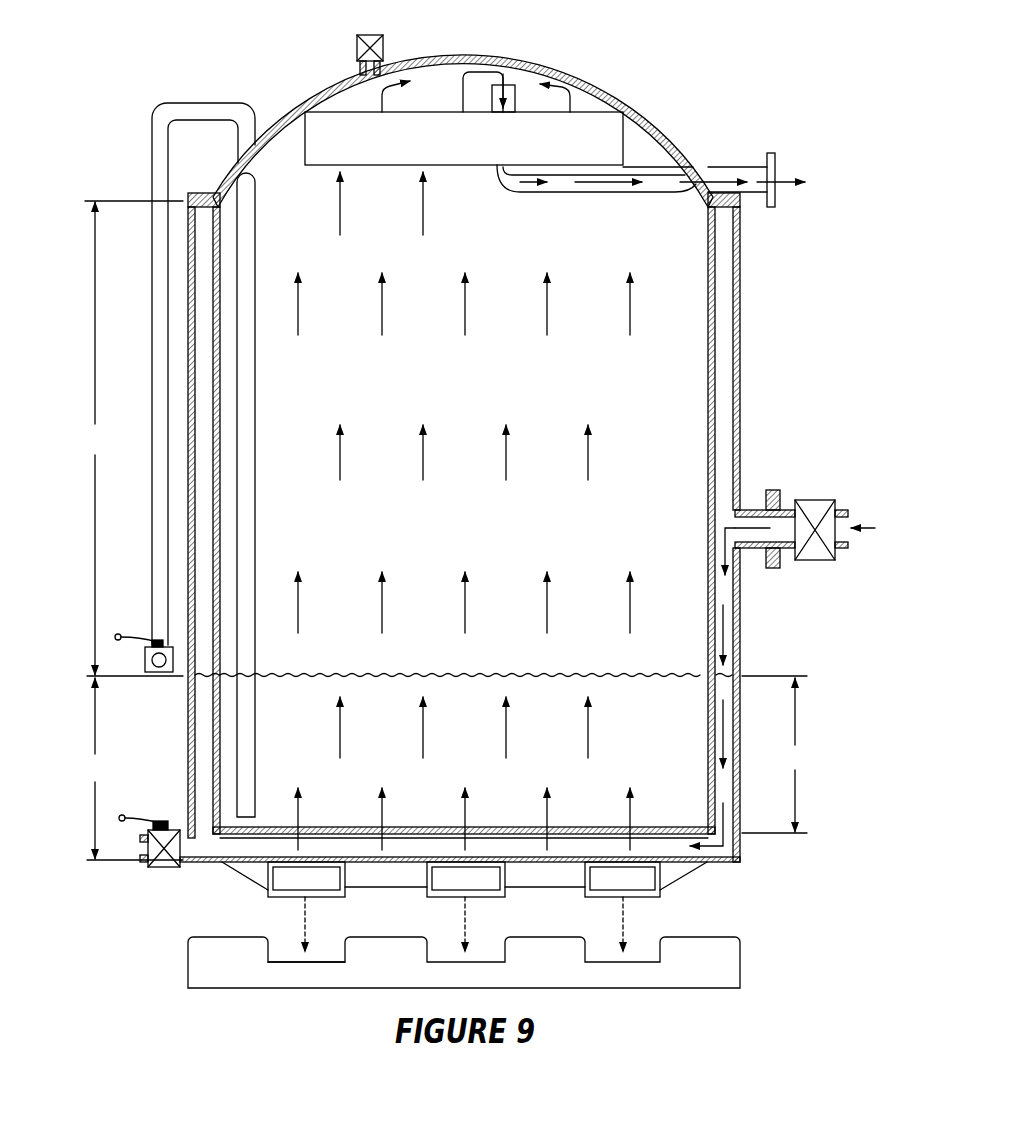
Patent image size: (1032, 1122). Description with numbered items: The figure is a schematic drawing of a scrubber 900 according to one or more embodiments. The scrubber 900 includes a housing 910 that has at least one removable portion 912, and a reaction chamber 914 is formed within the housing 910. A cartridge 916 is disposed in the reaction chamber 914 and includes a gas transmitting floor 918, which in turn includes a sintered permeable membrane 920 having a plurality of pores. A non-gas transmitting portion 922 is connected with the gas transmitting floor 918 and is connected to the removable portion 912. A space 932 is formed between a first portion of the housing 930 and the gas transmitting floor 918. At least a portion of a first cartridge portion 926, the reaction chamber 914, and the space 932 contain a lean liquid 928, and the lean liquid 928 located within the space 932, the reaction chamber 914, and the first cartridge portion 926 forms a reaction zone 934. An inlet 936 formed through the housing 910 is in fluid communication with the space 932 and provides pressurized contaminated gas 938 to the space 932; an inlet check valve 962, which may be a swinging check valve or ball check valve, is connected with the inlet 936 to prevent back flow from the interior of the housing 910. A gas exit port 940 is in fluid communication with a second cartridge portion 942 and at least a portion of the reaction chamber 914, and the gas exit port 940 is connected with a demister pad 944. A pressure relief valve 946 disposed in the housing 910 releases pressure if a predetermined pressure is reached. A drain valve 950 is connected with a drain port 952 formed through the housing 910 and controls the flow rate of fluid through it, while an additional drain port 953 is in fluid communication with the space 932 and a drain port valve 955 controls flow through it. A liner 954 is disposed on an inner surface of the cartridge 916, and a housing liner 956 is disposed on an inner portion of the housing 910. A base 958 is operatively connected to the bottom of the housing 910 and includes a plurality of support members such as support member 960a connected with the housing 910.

The scrubber 900 is at (786, 34).
The housing 910 is at (740, 418).
The removable portion 912 is at (681, 147).
The reaction chamber 914 is at (685, 281).
The cartridge 916 is at (722, 314).
The gas transmitting floor 918 is at (600, 806).
The sintered permeable membrane 920 is at (658, 826).
The non-gas transmitting portion 922 is at (715, 363).
The first cartridge portion 926 is at (776, 754).
The lean liquid 928 is at (650, 672).
The first portion of the housing 930 is at (722, 863).
The space 932 is at (224, 846).
The reaction zone 934 is at (132, 768).
The inlet 936 is at (752, 510).
The pressurized contaminated gas 938 is at (862, 530).
The gas exit port 940 is at (777, 158).
The second cartridge portion 942 is at (131, 438).
The demister pad 944 is at (625, 137).
The pressure relief valve 946 is at (357, 46).
The drain valve 950 is at (158, 674).
The drain port 952 is at (203, 103).
The additional drain port 953 is at (143, 863).
The liner 954 is at (221, 441).
The drain port valve 955 is at (165, 871).
The housing liner 956 is at (733, 453).
The base 958 is at (742, 963).
The support member 960a is at (228, 937).
The inlet check valve 962 is at (815, 500).